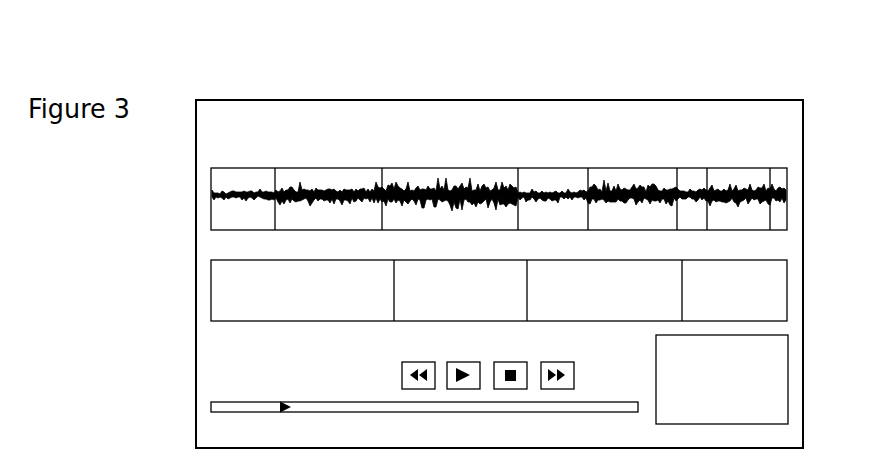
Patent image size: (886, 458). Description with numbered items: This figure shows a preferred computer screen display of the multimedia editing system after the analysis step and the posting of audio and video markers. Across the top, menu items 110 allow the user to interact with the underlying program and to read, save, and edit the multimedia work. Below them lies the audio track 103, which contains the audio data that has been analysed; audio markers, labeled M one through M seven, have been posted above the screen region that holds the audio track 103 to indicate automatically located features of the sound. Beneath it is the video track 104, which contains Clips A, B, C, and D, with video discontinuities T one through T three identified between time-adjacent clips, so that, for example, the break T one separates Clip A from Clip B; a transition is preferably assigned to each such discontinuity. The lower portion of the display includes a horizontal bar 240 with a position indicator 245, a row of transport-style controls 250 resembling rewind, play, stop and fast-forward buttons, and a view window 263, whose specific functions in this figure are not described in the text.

The menu items 110 is at (238, 112).
The audio track 103 is at (787, 172).
The video track 104 is at (787, 262).
The progress bar 240 is at (370, 400).
The position indicator 245 is at (278, 407).
The playback control buttons 250 is at (541, 355).
The preview window 263 is at (655, 357).